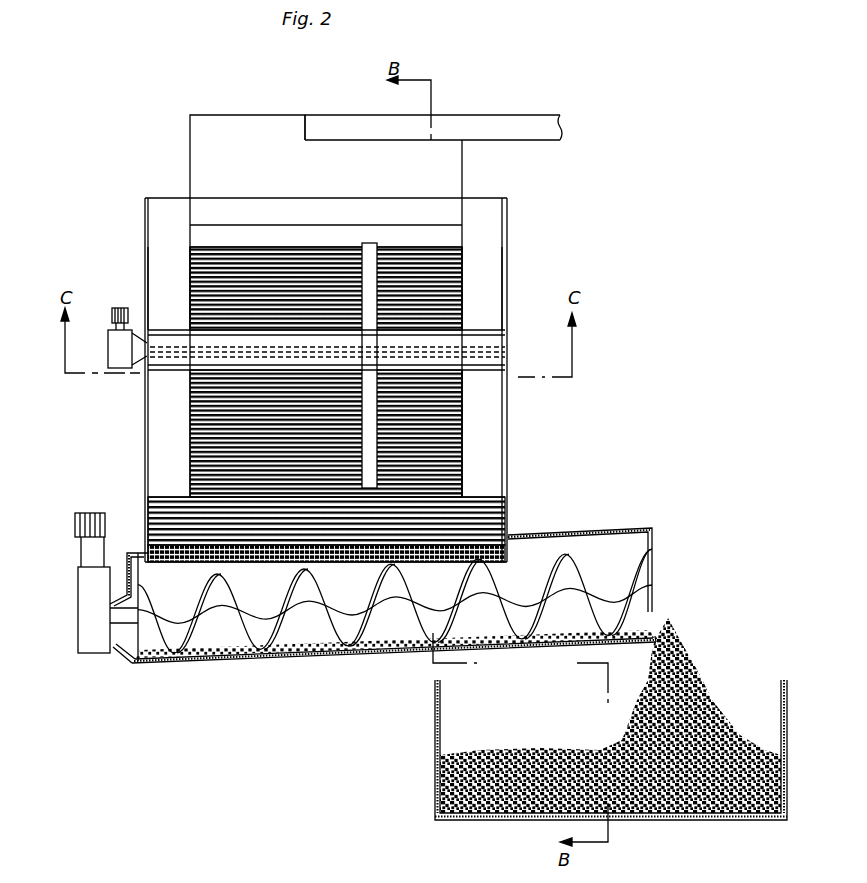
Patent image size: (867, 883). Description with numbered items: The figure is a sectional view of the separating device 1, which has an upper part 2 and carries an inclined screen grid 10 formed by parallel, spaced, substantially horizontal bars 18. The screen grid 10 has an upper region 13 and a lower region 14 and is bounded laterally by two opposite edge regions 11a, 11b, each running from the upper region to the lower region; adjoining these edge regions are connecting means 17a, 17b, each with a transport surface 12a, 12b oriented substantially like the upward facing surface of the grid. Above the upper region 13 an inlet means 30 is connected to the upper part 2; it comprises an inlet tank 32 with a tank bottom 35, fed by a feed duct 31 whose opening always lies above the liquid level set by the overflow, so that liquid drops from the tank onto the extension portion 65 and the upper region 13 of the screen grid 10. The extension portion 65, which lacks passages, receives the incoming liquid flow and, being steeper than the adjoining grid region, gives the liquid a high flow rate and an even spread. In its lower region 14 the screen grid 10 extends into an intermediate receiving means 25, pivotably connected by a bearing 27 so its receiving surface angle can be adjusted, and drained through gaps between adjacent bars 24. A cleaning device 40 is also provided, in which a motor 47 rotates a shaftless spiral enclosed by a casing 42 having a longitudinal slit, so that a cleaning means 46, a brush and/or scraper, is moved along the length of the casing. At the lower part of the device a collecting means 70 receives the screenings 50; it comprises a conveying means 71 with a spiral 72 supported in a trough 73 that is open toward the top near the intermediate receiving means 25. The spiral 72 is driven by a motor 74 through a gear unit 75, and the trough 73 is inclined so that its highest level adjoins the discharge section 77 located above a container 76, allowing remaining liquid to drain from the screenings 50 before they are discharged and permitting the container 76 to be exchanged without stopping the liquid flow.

The separating device 1 is at (166, 158).
The upper part 2 is at (221, 128).
The screen grid 10 is at (447, 298).
The edge region 11a is at (197, 260).
The edge region 11b is at (452, 260).
The transport surface 12a is at (162, 263).
The transport surface 12b is at (480, 263).
The upper region 13 is at (237, 290).
The lower region 14 is at (277, 488).
The connecting means 17a is at (170, 212).
The connecting means 17b is at (478, 217).
The bars 18 is at (293, 273).
The bars 24 is at (477, 518).
The intermediate receiving means 25 is at (345, 548).
The bearing 27 is at (158, 493).
The inlet means 30 is at (268, 114).
The feed duct 31 is at (525, 128).
The inlet tank 32 is at (290, 150).
The tank bottom 35 is at (337, 212).
The cleaning device 40 is at (173, 343).
The casing 42 is at (475, 345).
The cleaning means 46 is at (368, 250).
The motor 47 is at (112, 342).
The screenings 50 is at (663, 618).
The extension portion 65 is at (400, 237).
The collecting means 70 is at (140, 671).
The conveying means 71 is at (297, 657).
The spiral 72 is at (183, 643).
The trough 73 is at (410, 652).
The motor 74 is at (78, 528).
The gear unit 75 is at (85, 597).
The container 76 is at (437, 768).
The discharge section 77 is at (653, 543).